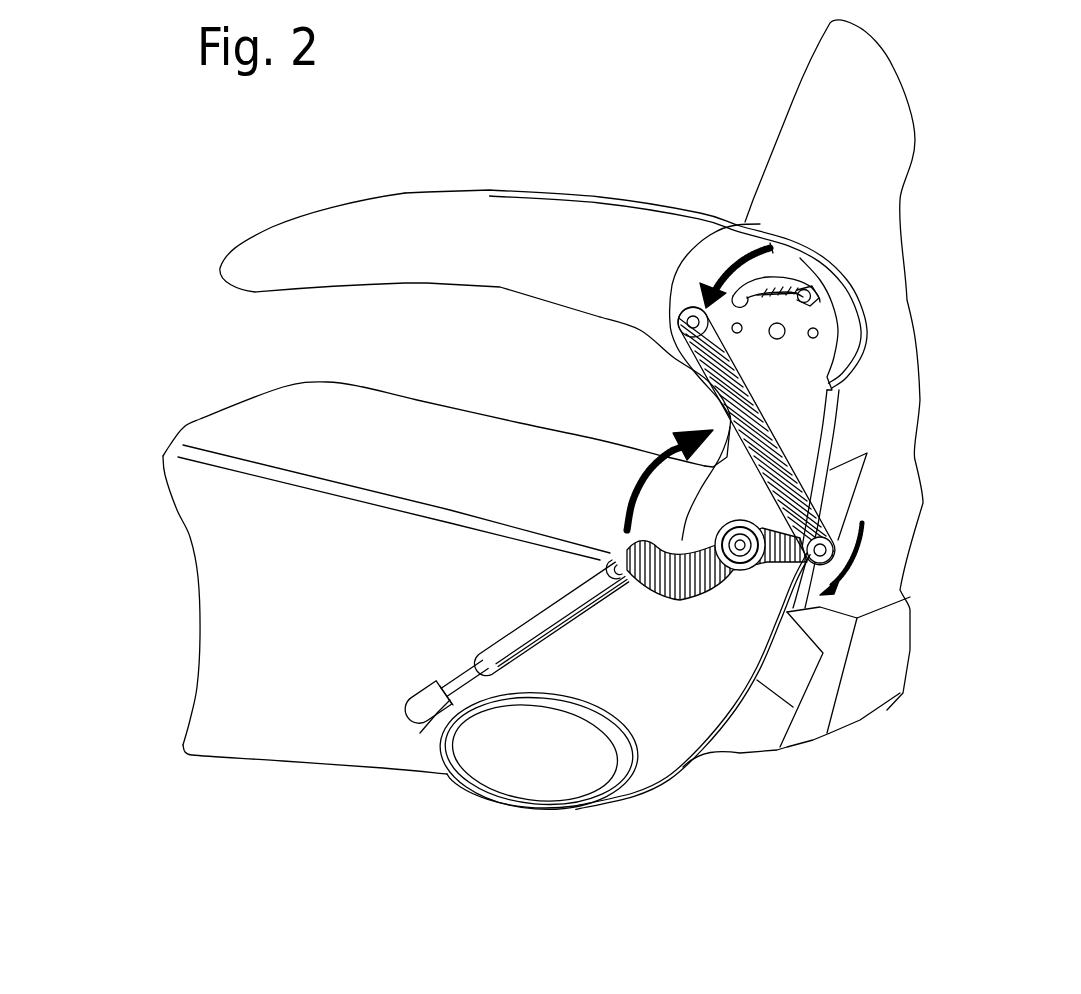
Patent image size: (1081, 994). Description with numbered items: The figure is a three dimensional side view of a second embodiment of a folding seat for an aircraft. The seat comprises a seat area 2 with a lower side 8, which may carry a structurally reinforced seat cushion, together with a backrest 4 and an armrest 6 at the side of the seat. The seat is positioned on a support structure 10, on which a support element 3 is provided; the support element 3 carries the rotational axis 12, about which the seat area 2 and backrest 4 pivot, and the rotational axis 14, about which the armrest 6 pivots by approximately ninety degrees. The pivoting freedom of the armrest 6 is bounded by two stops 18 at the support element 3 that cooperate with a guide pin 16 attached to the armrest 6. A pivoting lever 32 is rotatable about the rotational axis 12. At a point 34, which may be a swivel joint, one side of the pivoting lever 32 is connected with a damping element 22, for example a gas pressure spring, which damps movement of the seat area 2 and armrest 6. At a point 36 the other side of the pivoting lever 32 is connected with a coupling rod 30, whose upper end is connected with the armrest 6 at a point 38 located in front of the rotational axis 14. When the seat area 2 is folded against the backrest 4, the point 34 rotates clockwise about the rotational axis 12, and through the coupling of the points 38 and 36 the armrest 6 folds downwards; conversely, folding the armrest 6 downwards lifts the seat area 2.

The seat area 2 is at (417, 400).
The support element 3 is at (690, 770).
The backrest 4 is at (780, 133).
The armrest 6 is at (520, 193).
The lower side of the seat area 8 is at (313, 767).
The support structure 10 is at (553, 803).
The rotational axis 12 is at (740, 548).
The rotational axis of the armrest 14 is at (777, 331).
The guide pin 16 is at (809, 290).
The stops 18 is at (770, 248).
The damping element 22 is at (533, 620).
The coupling rod 30 is at (762, 420).
The pivoting lever 32 is at (700, 594).
The point 34 is at (627, 557).
The point 36 is at (837, 543).
The point 38 is at (676, 300).